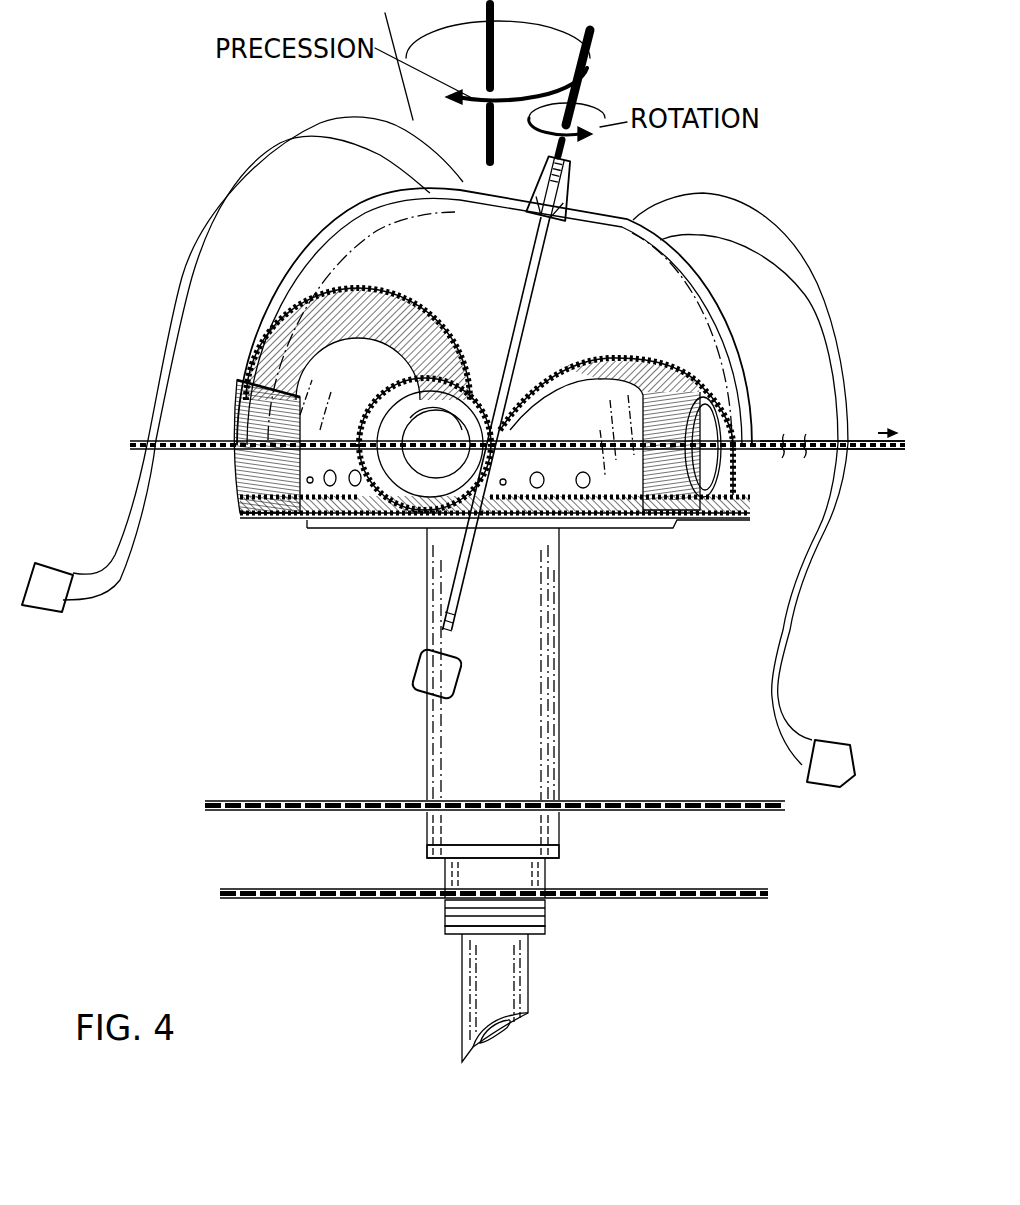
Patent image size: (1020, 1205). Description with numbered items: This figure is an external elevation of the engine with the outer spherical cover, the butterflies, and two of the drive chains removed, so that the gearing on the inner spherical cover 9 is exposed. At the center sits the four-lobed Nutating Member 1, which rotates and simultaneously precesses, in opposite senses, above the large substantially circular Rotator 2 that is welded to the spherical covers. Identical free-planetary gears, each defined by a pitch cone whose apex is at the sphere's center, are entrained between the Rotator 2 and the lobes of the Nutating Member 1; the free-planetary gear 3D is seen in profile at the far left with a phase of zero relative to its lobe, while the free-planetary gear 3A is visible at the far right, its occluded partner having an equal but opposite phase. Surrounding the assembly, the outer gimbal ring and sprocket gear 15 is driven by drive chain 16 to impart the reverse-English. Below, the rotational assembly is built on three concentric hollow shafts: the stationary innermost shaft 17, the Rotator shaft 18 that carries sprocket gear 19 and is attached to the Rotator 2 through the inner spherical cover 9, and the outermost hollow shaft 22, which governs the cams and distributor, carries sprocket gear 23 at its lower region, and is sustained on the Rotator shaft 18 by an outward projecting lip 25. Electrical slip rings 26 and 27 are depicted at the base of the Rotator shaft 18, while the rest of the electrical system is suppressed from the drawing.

The Nutating Member 1 is at (336, 243).
The Rotator 2 is at (276, 513).
The free-planetary gear 3D is at (236, 488).
The free-planetary gear 3A is at (705, 512).
The inner spherical cover 9 is at (618, 523).
The outer gimbal ring and sprocket gear 15 is at (802, 440).
The drive chain 16 is at (873, 452).
The innermost shaft 17 is at (466, 950).
The Rotator shaft 18 is at (447, 903).
The sprocket gear 19 is at (257, 898).
The outermost hollow shaft 22 is at (430, 828).
The sprocket gear 23 is at (261, 803).
The outward projecting lip 25 is at (560, 855).
The electrical slip ring 26 is at (545, 912).
The electrical slip ring 27 is at (545, 932).